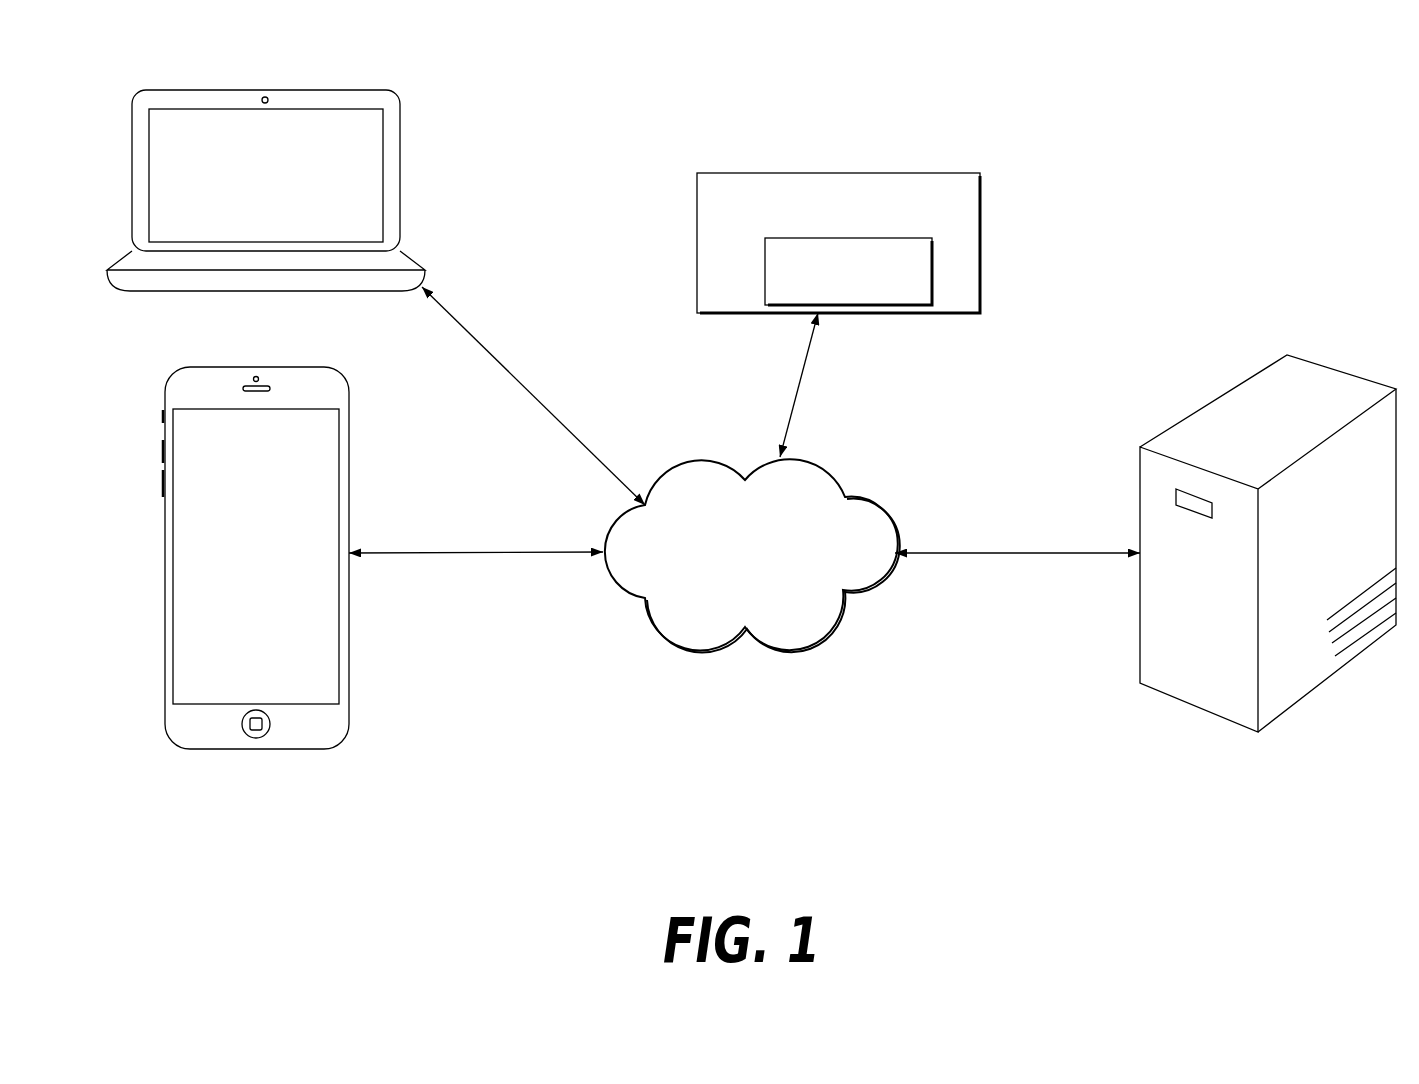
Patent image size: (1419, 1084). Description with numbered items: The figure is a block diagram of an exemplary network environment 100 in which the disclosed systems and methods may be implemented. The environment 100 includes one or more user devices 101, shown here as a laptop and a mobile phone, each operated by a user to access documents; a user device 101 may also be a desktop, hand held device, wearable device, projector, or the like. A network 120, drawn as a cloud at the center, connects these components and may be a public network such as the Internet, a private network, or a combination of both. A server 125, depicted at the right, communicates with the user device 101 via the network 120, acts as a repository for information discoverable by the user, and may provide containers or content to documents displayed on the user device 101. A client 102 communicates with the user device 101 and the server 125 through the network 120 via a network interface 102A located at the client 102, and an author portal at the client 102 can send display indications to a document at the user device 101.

The network environment 100 is at (1274, 110).
The user device 101 is at (170, 89).
The client 102 is at (748, 173).
The network interface 102A is at (933, 273).
The network 120 is at (752, 555).
The server 125 is at (1295, 703).